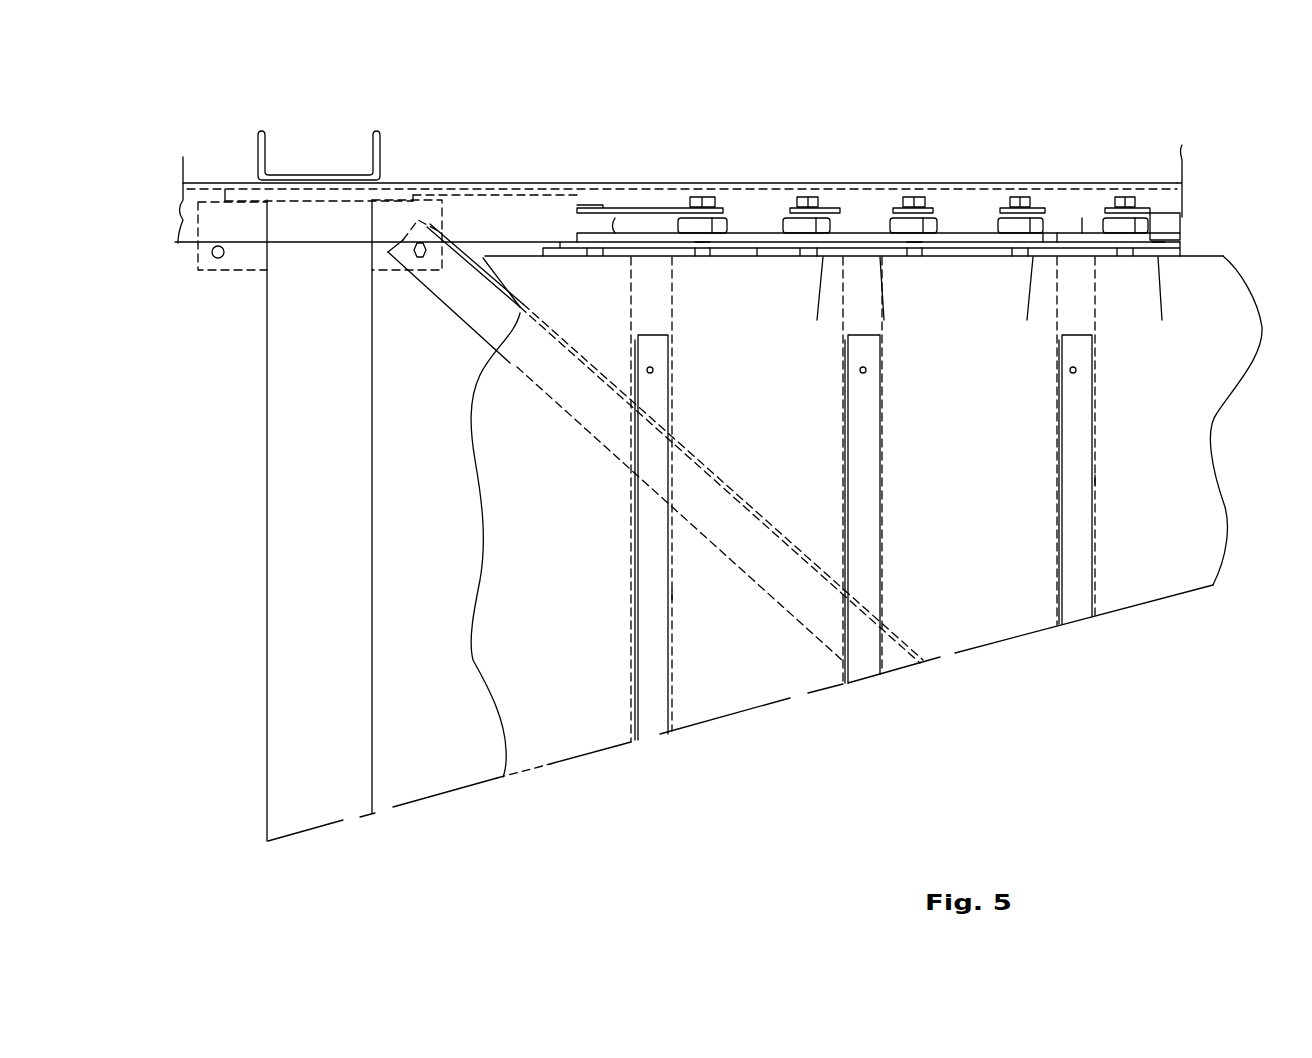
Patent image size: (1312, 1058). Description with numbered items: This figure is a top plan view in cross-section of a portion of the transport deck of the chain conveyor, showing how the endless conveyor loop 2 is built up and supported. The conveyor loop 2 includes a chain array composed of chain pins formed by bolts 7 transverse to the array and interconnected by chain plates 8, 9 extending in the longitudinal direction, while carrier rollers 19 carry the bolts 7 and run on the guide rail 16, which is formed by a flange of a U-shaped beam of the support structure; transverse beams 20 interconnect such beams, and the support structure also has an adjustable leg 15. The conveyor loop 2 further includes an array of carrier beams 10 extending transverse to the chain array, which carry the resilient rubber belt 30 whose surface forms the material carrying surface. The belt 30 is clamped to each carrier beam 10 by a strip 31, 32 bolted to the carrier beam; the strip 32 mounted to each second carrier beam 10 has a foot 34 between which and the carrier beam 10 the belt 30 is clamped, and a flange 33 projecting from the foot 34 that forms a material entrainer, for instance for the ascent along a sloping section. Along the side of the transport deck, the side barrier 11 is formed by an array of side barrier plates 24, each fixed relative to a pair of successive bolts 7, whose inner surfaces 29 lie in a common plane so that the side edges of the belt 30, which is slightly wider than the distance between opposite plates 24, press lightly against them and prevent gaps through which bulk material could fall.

The conveyor loop 2 is at (252, 482).
The bolts 7 is at (808, 197).
The chain plates 8 is at (1082, 210).
The chain plates 9 is at (979, 212).
The carrier beams 10 is at (632, 662).
The side barrier 11 is at (788, 261).
The adjustable leg 15 is at (381, 157).
The guide rail 16 is at (512, 215).
The rollers 19 is at (782, 223).
The transverse beams 20 is at (267, 602).
The side barrier plates 24 is at (704, 261).
The surfaces 29 is at (825, 257).
The rubber belt 30 is at (765, 548).
The strip 31 is at (863, 514).
The strip 32 is at (671, 591).
The flange 33 is at (638, 693).
The foot 34 is at (653, 662).